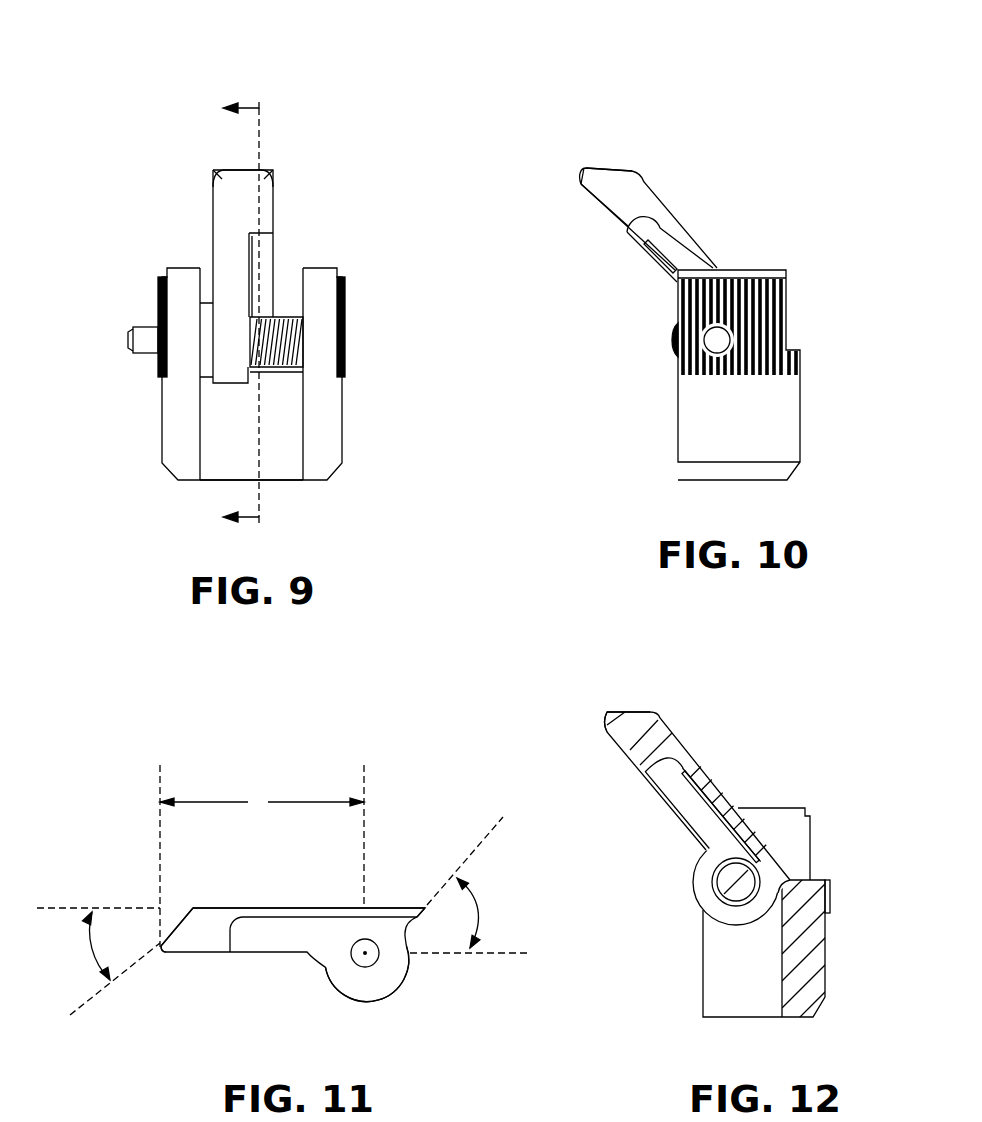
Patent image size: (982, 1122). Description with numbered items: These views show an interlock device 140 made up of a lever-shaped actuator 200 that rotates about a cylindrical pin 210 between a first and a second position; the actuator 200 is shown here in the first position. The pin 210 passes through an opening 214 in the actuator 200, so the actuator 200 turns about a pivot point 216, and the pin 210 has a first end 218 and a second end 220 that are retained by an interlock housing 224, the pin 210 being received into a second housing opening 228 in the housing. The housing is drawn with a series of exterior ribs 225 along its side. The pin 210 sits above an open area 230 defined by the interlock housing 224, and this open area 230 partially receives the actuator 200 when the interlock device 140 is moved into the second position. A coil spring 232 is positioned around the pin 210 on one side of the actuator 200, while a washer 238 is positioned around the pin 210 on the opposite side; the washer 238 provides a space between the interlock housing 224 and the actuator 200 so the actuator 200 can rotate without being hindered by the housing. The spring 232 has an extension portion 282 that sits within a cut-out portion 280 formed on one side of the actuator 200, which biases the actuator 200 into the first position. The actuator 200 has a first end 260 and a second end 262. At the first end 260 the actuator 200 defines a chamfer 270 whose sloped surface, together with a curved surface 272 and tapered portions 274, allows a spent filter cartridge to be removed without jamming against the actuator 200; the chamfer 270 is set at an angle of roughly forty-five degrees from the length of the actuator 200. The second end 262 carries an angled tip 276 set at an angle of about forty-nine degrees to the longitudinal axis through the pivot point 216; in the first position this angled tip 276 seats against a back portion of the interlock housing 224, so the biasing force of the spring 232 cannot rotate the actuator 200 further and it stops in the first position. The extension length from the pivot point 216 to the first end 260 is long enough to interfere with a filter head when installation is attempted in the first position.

In FIG. 9, the interlock device 140 is at (276, 78).
In FIG. 10, the interlock device 140 is at (721, 122).
In FIG. 12, the interlock device 140 is at (756, 726).
In FIG. 9, the actuator 200 is at (212, 217).
In FIG. 10, the actuator 200 is at (661, 203).
In FIG. 11, the actuator 200 is at (288, 760).
In FIG. 12, the actuator 200 is at (733, 809).
In FIG. 9, the pin 210 is at (127, 343).
In FIG. 10, the pin 210 is at (712, 350).
In FIG. 11, the opening 214 is at (352, 943).
In FIG. 11, the pivot point 216 is at (363, 953).
In FIG. 9, the first end 218 is at (132, 327).
In FIG. 9, the second end 220 is at (343, 338).
In FIG. 10, the second end 220 is at (724, 341).
In FIG. 12, the interlock housing 224 is at (815, 975).
In FIG. 10, the housing ribs 225 is at (748, 295).
In FIG. 10, the second housing opening 228 is at (710, 335).
In FIG. 9, the open area 230 is at (233, 462).
In FIG. 9, the spring 232 is at (287, 317).
In FIG. 12, the spring 232 is at (720, 893).
In FIG. 9, the washer 238 is at (210, 303).
In FIG. 10, the first end 260 is at (590, 196).
In FIG. 11, the first end 260 is at (158, 935).
In FIG. 11, the second end 262 is at (403, 963).
In FIG. 12, the second end 262 is at (790, 850).
In FIG. 9, the chamfer 270 is at (241, 170).
In FIG. 10, the chamfer 270 is at (602, 168).
In FIG. 11, the chamfer 270 is at (177, 917).
In FIG. 12, the chamfer 270 is at (638, 708).
In FIG. 10, the curved surface 272 is at (580, 178).
In FIG. 11, the curved surface 272 is at (162, 950).
In FIG. 12, the curved surface 272 is at (605, 712).
In FIG. 9, the tapered portions 274 is at (213, 171).
In FIG. 11, the angled tip 276 is at (420, 907).
In FIG. 12, the angled tip 276 is at (783, 887).
In FIG. 9, the cut-out portion 280 is at (265, 257).
In FIG. 10, the cut-out portion 280 is at (634, 250).
In FIG. 11, the cut-out portion 280 is at (272, 927).
In FIG. 12, the cut-out portion 280 is at (690, 812).
In FIG. 10, the extension portion 282 is at (645, 248).
In FIG. 12, the extension portion 282 is at (688, 775).